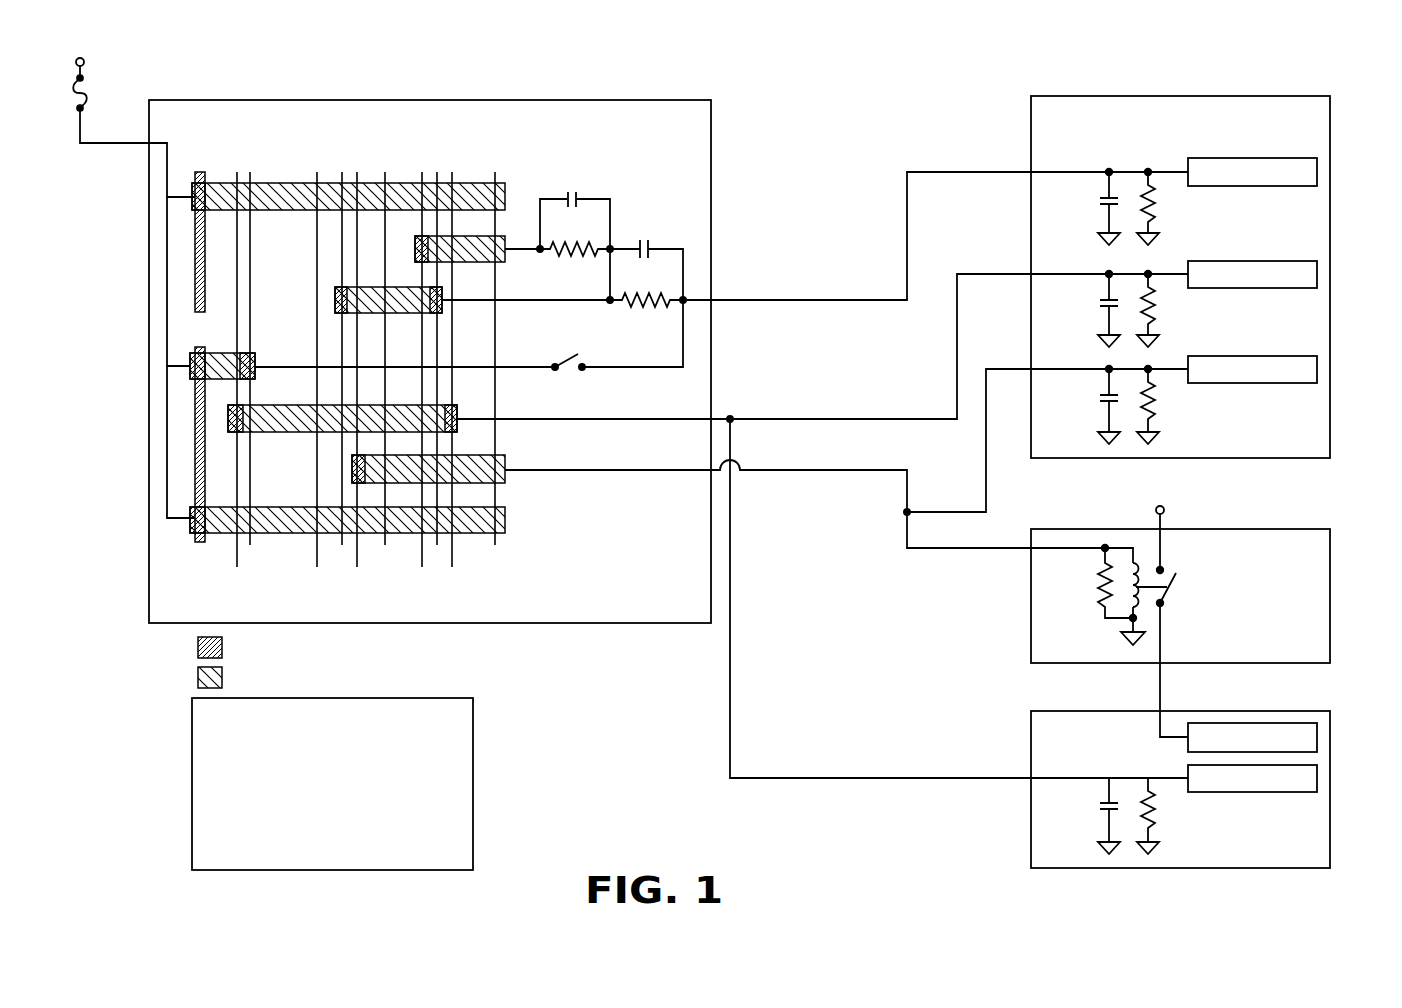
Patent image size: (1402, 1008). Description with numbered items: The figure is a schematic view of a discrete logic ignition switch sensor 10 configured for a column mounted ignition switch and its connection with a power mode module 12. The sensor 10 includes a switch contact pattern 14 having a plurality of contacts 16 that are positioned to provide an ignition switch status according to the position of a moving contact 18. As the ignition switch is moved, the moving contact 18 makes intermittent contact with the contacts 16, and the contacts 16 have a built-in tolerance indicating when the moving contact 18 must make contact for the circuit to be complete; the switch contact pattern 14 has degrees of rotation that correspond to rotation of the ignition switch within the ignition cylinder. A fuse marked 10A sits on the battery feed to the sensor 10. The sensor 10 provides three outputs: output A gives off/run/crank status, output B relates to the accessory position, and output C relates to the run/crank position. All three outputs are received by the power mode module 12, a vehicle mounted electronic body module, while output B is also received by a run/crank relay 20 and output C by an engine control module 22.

The discrete logic ignition switch sensor 10 is at (728, 106).
The fuse 10A is at (104, 95).
The power mode module 12 is at (1332, 143).
The switch contact pattern 14 is at (503, 100).
The contacts 16 is at (222, 183).
The moving contact 18 is at (195, 243).
The run/crank relay 20 is at (1285, 529).
The engine control module 22 is at (1287, 711).